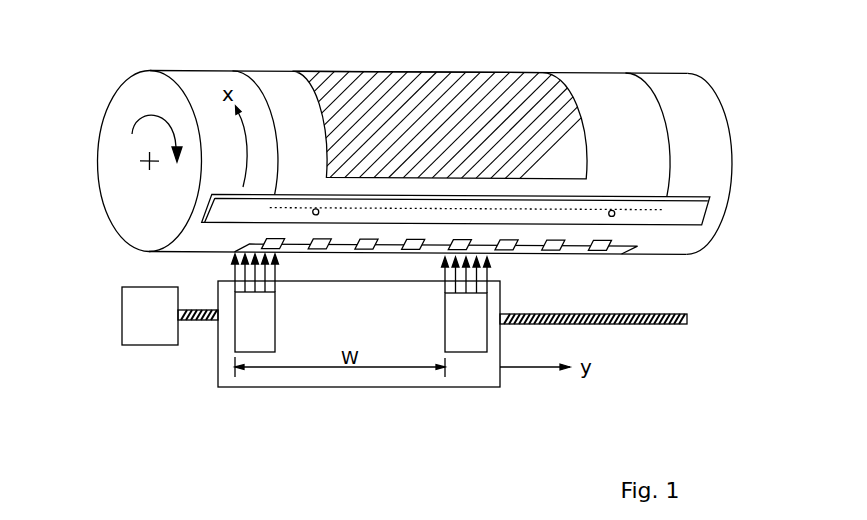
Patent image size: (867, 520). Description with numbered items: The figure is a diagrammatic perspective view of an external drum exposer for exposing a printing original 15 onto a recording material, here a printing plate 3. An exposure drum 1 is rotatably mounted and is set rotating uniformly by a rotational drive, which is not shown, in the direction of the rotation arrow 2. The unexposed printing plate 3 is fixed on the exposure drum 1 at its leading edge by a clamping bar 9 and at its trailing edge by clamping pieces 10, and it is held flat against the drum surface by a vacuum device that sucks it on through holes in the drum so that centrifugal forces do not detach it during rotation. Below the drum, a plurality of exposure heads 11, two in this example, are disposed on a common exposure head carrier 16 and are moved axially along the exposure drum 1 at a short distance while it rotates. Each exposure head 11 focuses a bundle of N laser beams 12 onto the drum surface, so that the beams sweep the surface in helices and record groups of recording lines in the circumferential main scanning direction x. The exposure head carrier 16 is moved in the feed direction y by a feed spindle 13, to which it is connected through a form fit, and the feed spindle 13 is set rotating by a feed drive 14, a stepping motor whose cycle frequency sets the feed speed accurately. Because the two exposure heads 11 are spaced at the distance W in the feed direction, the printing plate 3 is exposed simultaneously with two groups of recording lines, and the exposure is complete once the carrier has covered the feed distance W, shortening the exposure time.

The exposure drum 1 is at (152, 90).
The rotation arrow 2 is at (135, 128).
The printing plate 3 is at (268, 85).
The clamping bar 9 is at (700, 210).
The clamping pieces 10 is at (597, 250).
The exposure heads 11 is at (248, 335).
The laser beams 12 is at (233, 272).
The feed spindle 13 is at (642, 322).
The feed drive 14 is at (137, 335).
The printing original 15 is at (342, 90).
The exposure head carrier 16 is at (258, 375).